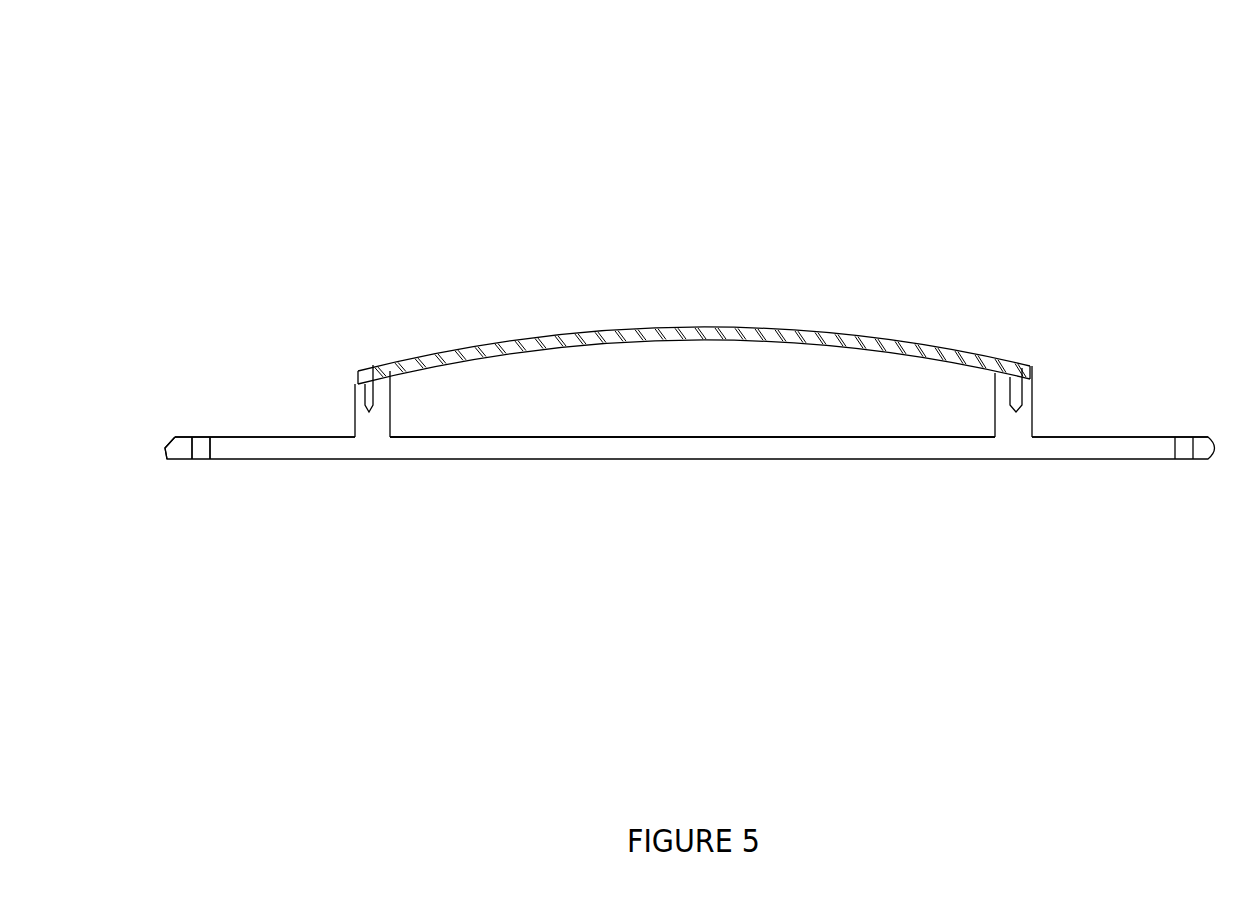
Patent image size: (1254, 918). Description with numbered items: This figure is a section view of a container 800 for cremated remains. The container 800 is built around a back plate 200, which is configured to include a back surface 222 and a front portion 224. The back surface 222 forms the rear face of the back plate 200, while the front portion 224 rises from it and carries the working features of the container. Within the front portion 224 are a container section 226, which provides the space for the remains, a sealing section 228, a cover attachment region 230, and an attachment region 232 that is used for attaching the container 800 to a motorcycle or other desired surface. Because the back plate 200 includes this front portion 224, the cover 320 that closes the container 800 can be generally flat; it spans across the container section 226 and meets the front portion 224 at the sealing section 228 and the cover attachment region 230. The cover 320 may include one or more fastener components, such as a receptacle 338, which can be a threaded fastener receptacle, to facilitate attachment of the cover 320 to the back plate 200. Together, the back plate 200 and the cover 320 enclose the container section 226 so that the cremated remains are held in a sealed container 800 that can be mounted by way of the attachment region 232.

The container 800 is at (600, 125).
The back plate 200 is at (633, 447).
The back surface 222 is at (420, 459).
The attachment region 232 is at (216, 468).
The front portion 224 is at (330, 389).
The cover attachment region 230 is at (362, 388).
The sealing section 228 is at (1001, 376).
The receptacle 338 is at (1018, 368).
The cover 320 is at (800, 343).
The container section 226 is at (521, 387).